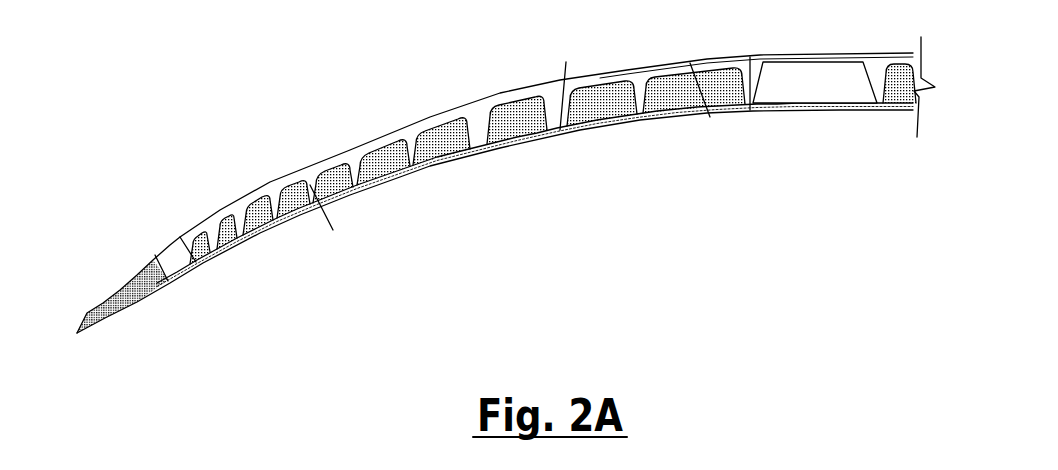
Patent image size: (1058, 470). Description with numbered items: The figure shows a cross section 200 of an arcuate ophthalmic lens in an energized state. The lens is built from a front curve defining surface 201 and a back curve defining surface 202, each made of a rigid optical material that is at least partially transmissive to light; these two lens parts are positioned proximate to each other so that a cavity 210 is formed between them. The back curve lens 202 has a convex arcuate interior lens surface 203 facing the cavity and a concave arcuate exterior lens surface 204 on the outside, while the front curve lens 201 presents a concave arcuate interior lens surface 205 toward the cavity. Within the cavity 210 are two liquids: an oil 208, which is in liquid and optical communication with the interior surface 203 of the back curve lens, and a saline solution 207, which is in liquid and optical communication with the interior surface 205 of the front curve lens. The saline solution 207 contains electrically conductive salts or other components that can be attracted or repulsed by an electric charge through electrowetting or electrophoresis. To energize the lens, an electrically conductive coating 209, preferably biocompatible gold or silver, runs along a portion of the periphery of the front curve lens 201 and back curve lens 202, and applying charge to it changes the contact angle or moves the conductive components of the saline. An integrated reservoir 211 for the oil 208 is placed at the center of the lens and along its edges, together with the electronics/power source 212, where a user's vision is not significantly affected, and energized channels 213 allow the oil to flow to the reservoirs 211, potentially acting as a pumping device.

The cross section of arcuate lens 200 is at (506, 187).
The front curve defining surface 201 is at (495, 182).
The back curve defining surface 202 is at (495, 221).
The convex arcuate interior lens surface 203 is at (585, 85).
The concave arcuate exterior lens surface 204 is at (535, 193).
The concave arcuate interior lens surface 205 is at (728, 111).
The saline solution 207 is at (346, 217).
The oil 208 is at (462, 161).
The electrically conductive coating 209 is at (386, 178).
The cavity 210 is at (813, 69).
The integrated reservoir 211 is at (509, 201).
The electronics/power source 212 is at (141, 300).
The energized channels 213 is at (535, 197).